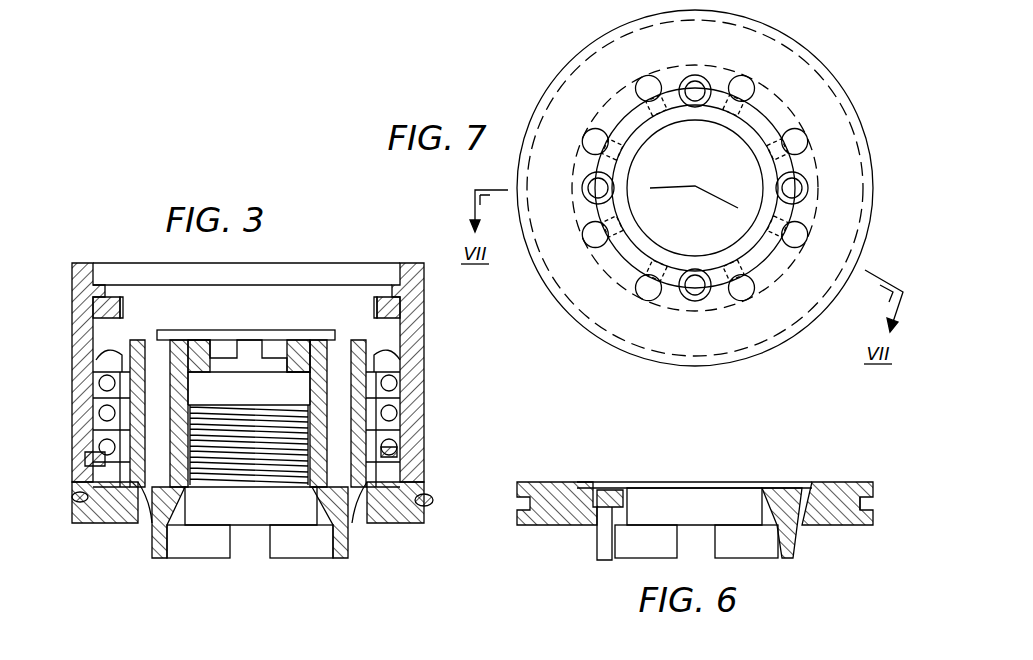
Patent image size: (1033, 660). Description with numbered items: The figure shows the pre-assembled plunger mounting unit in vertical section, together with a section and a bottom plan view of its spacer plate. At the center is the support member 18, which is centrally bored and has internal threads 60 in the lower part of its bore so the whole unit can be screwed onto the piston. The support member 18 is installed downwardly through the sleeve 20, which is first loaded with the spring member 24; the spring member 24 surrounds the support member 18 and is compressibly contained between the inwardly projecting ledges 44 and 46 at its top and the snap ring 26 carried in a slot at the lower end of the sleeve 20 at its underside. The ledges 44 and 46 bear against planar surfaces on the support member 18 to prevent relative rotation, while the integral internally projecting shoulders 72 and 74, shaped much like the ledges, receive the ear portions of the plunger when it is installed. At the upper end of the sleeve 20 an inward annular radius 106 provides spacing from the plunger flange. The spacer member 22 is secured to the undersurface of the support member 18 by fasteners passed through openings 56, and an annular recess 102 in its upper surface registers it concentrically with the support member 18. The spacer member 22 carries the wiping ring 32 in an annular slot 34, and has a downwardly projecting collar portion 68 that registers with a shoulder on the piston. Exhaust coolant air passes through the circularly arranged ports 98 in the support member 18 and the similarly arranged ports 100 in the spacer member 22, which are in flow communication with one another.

In FIG. 3, the shoulder 72 is at (110, 297).
In FIG. 3, the inward annular radius 106 is at (352, 275).
In FIG. 3, the ports 98 is at (160, 345).
In FIG. 3, the support member 18 is at (312, 345).
In FIG. 3, the shoulder 74 is at (405, 303).
In FIG. 3, the ledge 44 is at (108, 352).
In FIG. 3, the ledge 46 is at (408, 383).
In FIG. 3, the sleeve 20 is at (408, 388).
In FIG. 3, the spring member 24 is at (100, 447).
In FIG. 3, the wiping ring 32 is at (80, 497).
In FIG. 3, the snap ring 26 is at (410, 450).
In FIG. 3, the spacer member 22 is at (118, 522).
In FIG. 7, the spacer member 22 is at (605, 68).
In FIG. 6, the spacer member 22 is at (838, 495).
In FIG. 3, the ports 100 is at (148, 522).
In FIG. 7, the ports 100 is at (598, 238).
In FIG. 6, the ports 100 is at (800, 510).
In FIG. 3, the collar portion 68 is at (160, 550).
In FIG. 6, the collar portion 68 is at (793, 558).
In FIG. 3, the internal threads 60 is at (330, 455).
In FIG. 7, the openings 56 is at (595, 193).
In FIG. 6, the openings 56 is at (600, 550).
In FIG. 6, the annular recess 102 is at (610, 487).
In FIG. 6, the annular slot 34 is at (873, 503).